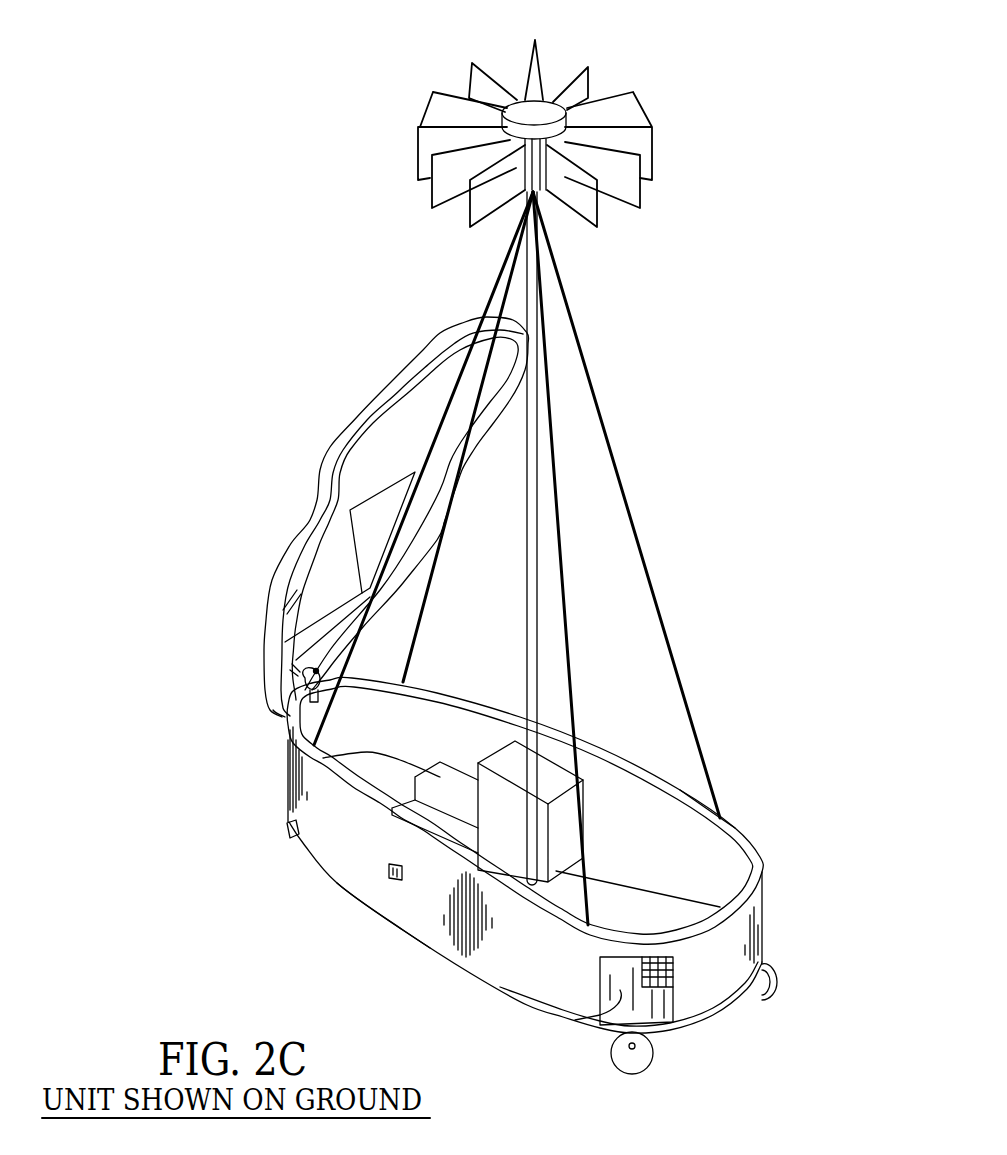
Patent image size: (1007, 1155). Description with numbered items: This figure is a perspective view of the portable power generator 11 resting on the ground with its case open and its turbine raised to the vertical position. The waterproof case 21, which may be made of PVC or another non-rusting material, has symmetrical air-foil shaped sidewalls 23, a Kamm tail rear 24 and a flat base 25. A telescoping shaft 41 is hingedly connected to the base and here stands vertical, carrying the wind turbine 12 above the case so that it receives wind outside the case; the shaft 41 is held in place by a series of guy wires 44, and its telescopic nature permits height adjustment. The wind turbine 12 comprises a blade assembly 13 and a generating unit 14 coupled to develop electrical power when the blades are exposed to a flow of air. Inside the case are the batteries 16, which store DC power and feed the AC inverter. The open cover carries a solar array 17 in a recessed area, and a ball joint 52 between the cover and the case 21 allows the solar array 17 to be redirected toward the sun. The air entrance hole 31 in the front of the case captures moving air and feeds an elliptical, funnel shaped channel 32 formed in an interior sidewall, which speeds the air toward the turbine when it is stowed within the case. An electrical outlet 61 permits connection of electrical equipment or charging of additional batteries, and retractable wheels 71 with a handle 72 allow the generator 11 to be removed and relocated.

The portable power generator 11 is at (224, 357).
The wind turbine 12 is at (604, 116).
The blade assembly 13 is at (625, 108).
The generating unit 14 is at (548, 110).
The batteries 16 is at (492, 780).
The solar array 17 is at (332, 567).
The waterproof case 21 is at (605, 762).
The sidewalls 23 is at (686, 796).
The Kamm tail rear 24 is at (289, 776).
The flat base 25 is at (415, 933).
The air entrance hole 31 is at (673, 995).
The funnel shaped channel 32 is at (560, 1018).
The telescoping shaft 41 is at (527, 497).
The guy wires 44 is at (503, 286).
The ball joint 52 is at (304, 700).
The electrical outlet 61 is at (388, 872).
The retractable wheels 71 is at (623, 1055).
The handle 72 is at (286, 826).